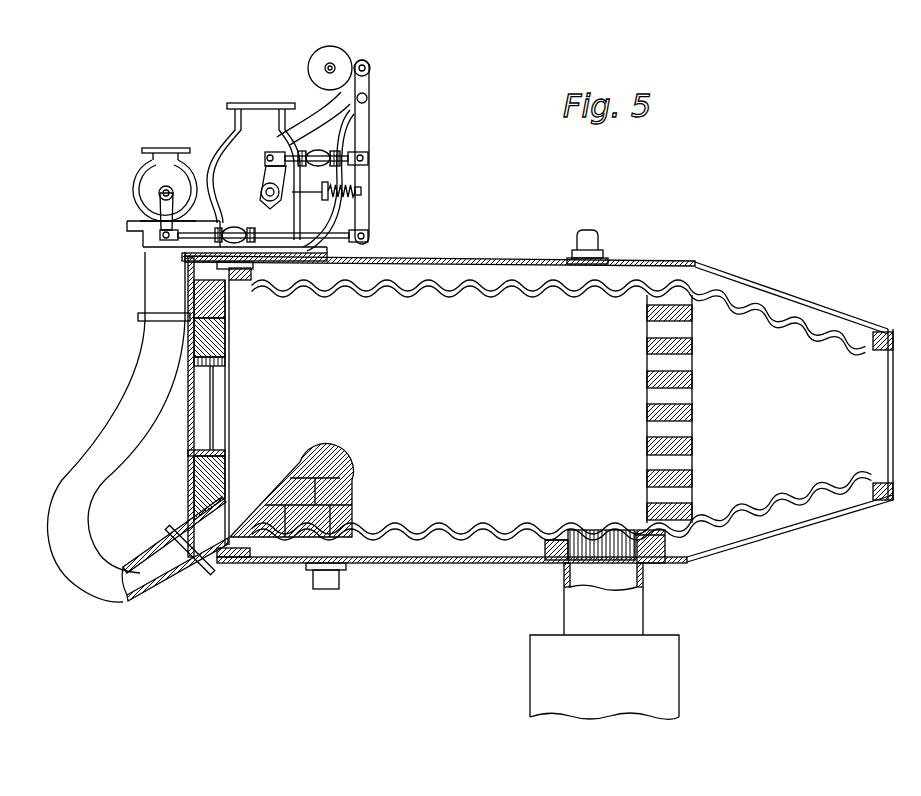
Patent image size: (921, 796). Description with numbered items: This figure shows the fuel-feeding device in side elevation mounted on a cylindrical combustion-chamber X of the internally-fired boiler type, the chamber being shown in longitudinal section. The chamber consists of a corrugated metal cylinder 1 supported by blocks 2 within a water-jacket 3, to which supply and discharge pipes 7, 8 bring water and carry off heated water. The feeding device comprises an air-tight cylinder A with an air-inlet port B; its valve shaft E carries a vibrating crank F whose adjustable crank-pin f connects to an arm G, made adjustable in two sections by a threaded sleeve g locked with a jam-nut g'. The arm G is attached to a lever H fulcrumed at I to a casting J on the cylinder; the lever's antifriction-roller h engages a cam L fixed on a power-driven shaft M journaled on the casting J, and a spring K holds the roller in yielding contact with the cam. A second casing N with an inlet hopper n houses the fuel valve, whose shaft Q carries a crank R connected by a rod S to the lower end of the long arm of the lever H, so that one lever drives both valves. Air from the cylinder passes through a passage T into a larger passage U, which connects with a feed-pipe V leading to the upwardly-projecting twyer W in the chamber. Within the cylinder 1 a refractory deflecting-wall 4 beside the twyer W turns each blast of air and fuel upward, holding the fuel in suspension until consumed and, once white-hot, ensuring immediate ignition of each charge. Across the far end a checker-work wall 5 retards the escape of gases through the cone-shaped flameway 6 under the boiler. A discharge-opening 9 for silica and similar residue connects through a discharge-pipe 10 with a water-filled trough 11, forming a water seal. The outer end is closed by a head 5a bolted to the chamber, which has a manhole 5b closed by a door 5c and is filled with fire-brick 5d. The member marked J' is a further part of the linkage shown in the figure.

The corrugated metal cylinder 1 is at (457, 527).
The blocks 2 is at (253, 560).
The water-jacket 3 is at (452, 273).
The deflecting-wall 4 is at (353, 485).
The checker-work wall 5 is at (646, 412).
The head 5a is at (228, 360).
The manhole 5b is at (215, 385).
The door 5c is at (196, 422).
The fire-brick 5d is at (227, 318).
The cone-shaped flameway 6 is at (790, 412).
The supply pipe 7 is at (590, 240).
The discharge pipe 8 is at (340, 582).
The discharge-opening 9 is at (586, 528).
The discharge-pipe 10 is at (630, 602).
The trough or receptacle 11 is at (545, 663).
The cylindrical combustion-chamber X is at (447, 400).
The air-tight cylinder or casing A is at (230, 138).
The air-inlet port B is at (261, 92).
The shaft E is at (261, 193).
The vibrating crank F is at (262, 175).
The arm or rod G is at (369, 159).
The lever H is at (370, 123).
The fulcrum I is at (368, 98).
The arm or casting J is at (313, 111).
The curved link J' is at (344, 180).
The spring K is at (366, 192).
The cam L is at (328, 47).
The wheel rim l is at (345, 52).
The shaft M is at (325, 66).
The second casing or cylinder N is at (134, 181).
The inlet port or hopper n is at (166, 140).
The shaft Q is at (173, 192).
The crank R is at (172, 207).
The rod S is at (313, 236).
The passage T is at (158, 235).
The passage U is at (146, 261).
The feed-pipe V is at (110, 444).
The twyer W is at (215, 520).
The adjustable crank-pin f is at (268, 156).
The internally-screw-threaded sleeve g is at (306, 175).
The jam-nut g' is at (325, 137).
The antifriction-roller h is at (370, 65).